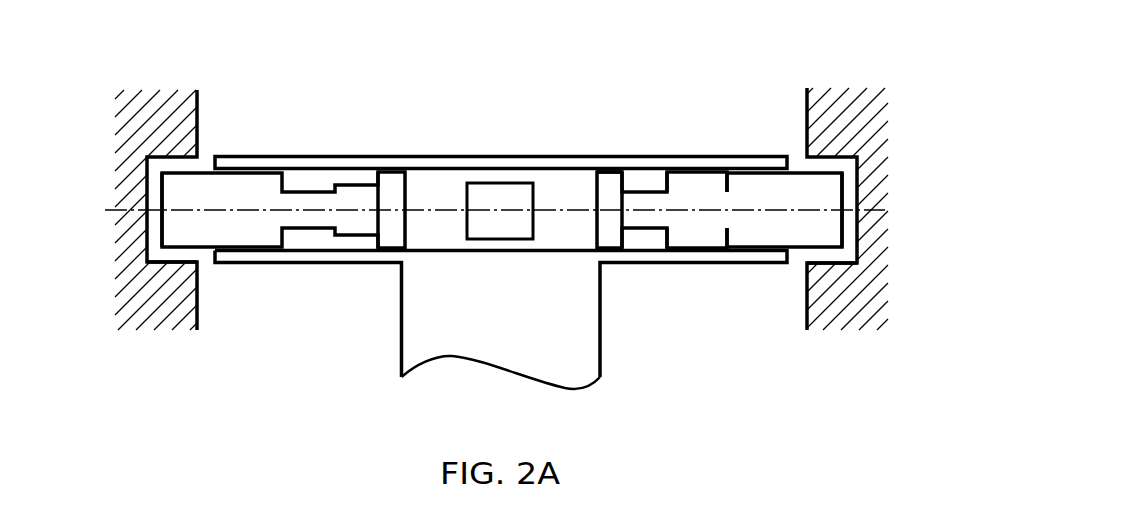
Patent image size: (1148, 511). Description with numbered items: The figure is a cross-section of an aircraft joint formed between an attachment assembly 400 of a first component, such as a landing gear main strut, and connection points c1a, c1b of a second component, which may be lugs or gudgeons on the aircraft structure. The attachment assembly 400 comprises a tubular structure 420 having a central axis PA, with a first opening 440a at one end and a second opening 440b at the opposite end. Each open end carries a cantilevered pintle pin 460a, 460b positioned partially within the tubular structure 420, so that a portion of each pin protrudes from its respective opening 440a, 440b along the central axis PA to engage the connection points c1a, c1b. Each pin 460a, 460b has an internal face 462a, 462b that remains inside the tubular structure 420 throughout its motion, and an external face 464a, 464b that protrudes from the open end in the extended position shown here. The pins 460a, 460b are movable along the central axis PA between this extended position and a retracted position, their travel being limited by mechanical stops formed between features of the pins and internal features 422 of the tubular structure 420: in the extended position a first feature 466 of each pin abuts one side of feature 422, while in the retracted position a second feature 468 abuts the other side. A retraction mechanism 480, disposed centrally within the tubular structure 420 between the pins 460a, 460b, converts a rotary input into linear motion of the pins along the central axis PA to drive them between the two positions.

The attachment assembly 400 is at (523, 439).
The tubular structure 420 is at (483, 156).
The internal features of the tubular structure 422 is at (635, 175).
The first opening 440a is at (790, 163).
The second opening 440b is at (213, 168).
The pintle pin 460a is at (775, 237).
The pintle pin 460b is at (225, 232).
The internal face 462a is at (597, 232).
The internal face 462b is at (418, 246).
The external face 464a is at (843, 192).
The external face 464b is at (162, 235).
The first feature of the pins 466 is at (610, 180).
The second feature of the pins 468 is at (722, 182).
The retraction mechanism 480 is at (522, 226).
The central axis PA is at (476, 212).
The connection point c1a is at (827, 272).
The connection point c1b is at (180, 268).